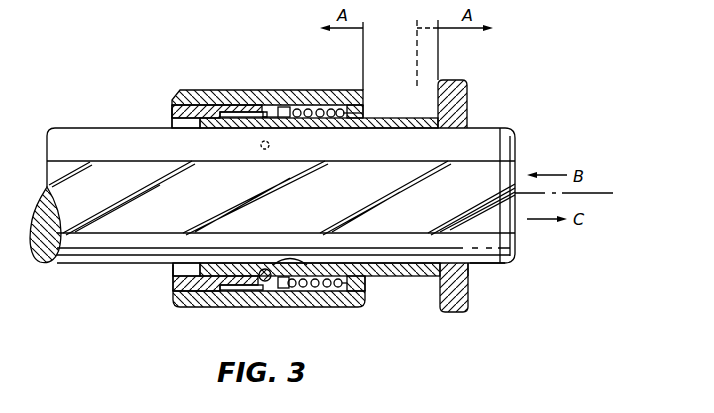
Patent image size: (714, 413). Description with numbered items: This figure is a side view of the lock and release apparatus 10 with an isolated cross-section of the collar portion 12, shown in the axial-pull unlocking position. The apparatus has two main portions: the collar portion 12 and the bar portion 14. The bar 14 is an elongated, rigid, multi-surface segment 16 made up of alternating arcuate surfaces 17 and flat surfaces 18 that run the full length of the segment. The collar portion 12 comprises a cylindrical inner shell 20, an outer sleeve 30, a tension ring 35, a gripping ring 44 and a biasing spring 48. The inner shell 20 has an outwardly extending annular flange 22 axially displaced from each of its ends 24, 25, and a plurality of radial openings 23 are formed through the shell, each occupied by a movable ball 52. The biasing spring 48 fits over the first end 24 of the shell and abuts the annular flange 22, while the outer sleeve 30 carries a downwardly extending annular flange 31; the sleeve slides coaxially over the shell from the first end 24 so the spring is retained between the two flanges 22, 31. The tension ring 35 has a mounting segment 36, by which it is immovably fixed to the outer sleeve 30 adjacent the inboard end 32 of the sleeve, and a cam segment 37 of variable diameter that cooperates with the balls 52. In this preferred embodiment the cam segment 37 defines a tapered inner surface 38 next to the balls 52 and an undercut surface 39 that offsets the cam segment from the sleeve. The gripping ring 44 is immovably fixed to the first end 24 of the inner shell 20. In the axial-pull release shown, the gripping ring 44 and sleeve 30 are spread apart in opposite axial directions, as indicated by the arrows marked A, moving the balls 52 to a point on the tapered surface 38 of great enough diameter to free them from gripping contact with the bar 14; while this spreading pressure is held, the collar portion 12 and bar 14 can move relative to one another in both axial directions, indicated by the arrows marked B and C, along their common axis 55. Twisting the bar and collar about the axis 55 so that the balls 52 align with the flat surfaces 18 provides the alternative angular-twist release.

The lock and release apparatus 10 is at (500, 67).
The collar portion 12 is at (466, 330).
The bar portion 14 is at (520, 140).
The multi-surface segment 16 is at (282, 198).
The arcuate surfaces 17 is at (502, 264).
The flat surfaces 18 is at (477, 170).
The inner shell 20 is at (403, 277).
The annular flange 22 is at (288, 284).
The radial openings 23 is at (260, 145).
The first end 24 is at (468, 276).
The second end 25 is at (175, 270).
The outer sleeve 30 is at (228, 90).
The annular flange of outer sleeve 31 is at (363, 104).
The inboard end 32 is at (173, 295).
The tension ring 35 is at (172, 113).
The mounting segment 36 is at (188, 107).
The cam segment 37 is at (247, 98).
The tapered inner surface 38 is at (272, 112).
The undercut surface 39 is at (258, 117).
The gripping ring 44 is at (453, 80).
The biasing spring 48 is at (310, 105).
The movable ball 52 is at (258, 286).
The common axis 55 is at (590, 193).